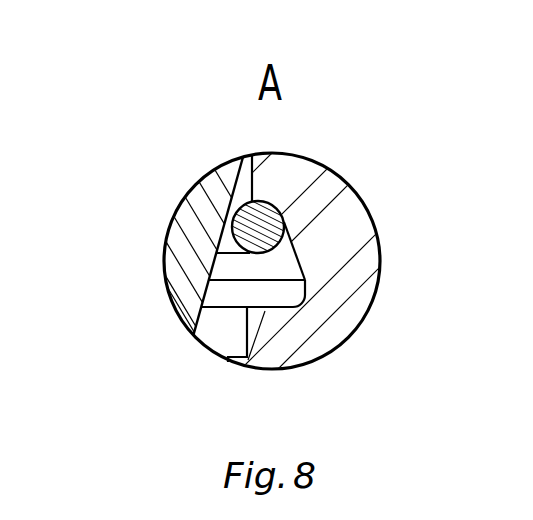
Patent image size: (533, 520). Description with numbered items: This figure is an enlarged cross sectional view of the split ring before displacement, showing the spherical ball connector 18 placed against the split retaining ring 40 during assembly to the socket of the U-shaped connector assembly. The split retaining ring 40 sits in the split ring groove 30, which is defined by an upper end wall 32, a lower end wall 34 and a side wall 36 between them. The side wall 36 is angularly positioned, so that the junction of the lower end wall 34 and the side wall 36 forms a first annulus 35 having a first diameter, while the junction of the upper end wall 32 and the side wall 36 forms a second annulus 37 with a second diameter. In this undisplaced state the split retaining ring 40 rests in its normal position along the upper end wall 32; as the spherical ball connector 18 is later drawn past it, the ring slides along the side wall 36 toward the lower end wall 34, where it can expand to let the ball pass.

The spherical ball connector 18 is at (200, 245).
The split ring groove 30 is at (266, 260).
The upper end wall 32 is at (317, 115).
The lower end wall 34 is at (296, 365).
The first annulus 35 is at (320, 325).
The side wall 36 is at (345, 231).
The second annulus 37 is at (331, 167).
The split retaining ring 40 is at (382, 203).